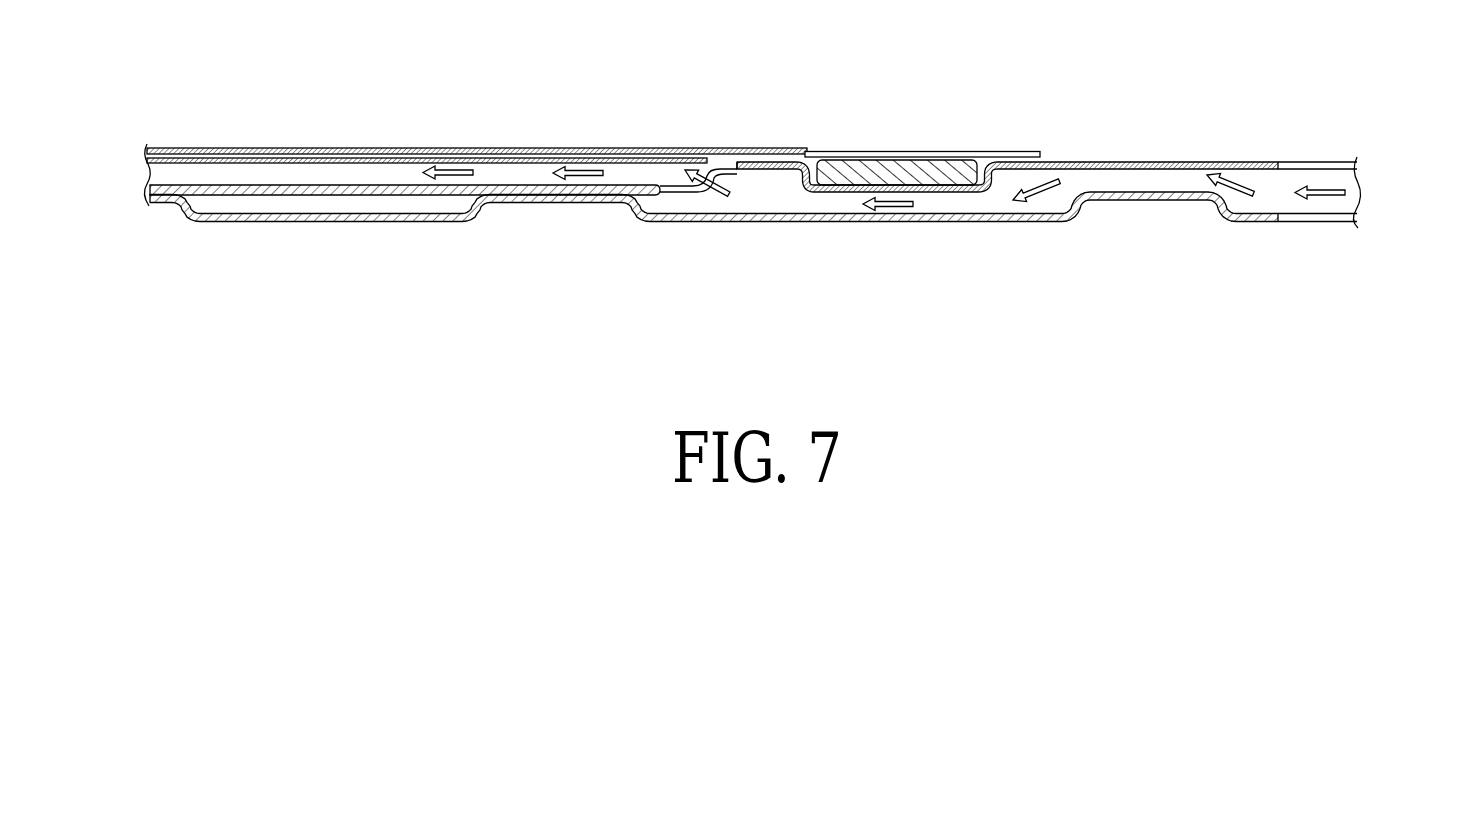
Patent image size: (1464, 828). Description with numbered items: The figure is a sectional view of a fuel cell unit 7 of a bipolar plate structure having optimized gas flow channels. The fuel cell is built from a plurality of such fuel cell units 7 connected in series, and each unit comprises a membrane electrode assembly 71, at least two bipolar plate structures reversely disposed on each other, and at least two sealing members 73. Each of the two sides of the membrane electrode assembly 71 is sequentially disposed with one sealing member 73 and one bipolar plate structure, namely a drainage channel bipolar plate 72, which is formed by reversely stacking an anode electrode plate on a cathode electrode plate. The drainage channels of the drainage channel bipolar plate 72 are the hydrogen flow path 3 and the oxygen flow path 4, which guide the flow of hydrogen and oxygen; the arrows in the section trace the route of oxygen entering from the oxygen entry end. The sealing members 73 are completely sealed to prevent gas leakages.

The fuel cell unit 7 is at (143, 221).
The membrane electrode assembly 71 is at (252, 152).
The drainage channel bipolar plate 72 is at (1378, 155).
The sealing member 73 is at (920, 165).
The oxygen flow path 4 is at (512, 173).
The hydrogen flow path 3 is at (163, 212).